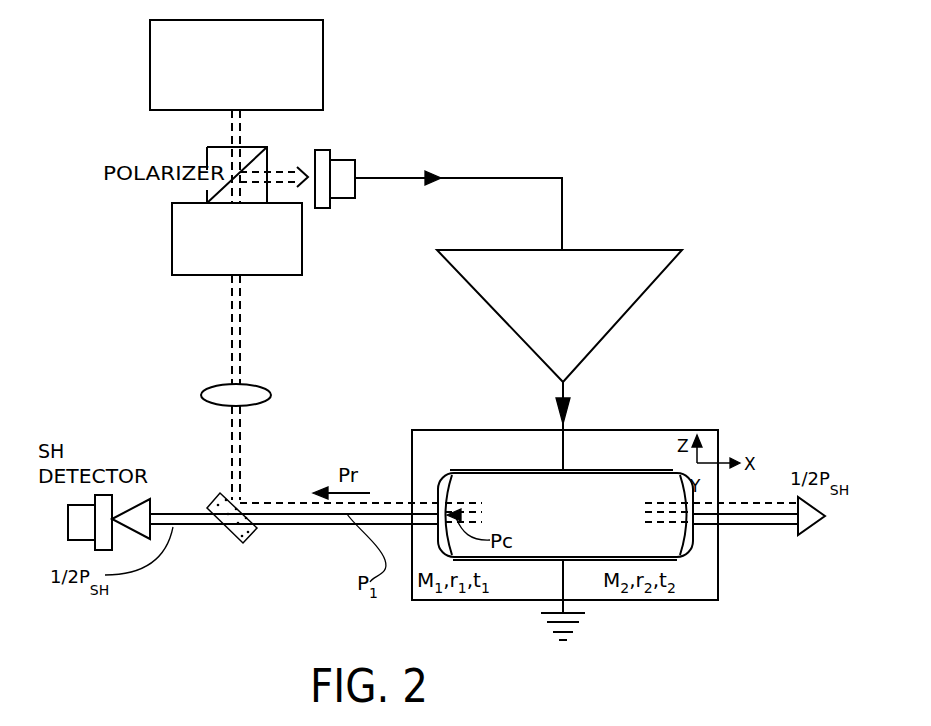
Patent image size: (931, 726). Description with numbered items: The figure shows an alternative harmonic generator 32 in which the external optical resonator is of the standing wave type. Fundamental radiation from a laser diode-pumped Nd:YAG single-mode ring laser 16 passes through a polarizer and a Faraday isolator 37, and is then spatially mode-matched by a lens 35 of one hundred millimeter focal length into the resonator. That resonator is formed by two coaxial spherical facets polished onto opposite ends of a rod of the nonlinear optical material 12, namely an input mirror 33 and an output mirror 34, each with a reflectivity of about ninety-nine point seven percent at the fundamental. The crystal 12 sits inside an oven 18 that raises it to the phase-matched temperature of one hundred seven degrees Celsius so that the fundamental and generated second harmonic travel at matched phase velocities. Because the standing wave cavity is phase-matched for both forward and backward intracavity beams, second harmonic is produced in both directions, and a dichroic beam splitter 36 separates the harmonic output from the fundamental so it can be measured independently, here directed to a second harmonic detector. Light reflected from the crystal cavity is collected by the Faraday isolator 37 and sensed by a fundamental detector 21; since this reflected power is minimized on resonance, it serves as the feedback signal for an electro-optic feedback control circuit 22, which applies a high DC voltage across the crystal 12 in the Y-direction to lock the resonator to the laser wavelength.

The nonlinear optical material 12 is at (578, 542).
The Nd:YAG single-mode ring laser 16 is at (323, 67).
The oven 18 is at (502, 430).
The detector 21 is at (345, 192).
The electro-optic feedback control circuit 22 is at (630, 310).
The harmonic generator 32 is at (660, 190).
The input mirror 33 is at (441, 505).
The output mirror 34 is at (692, 545).
The lens 35 is at (262, 386).
The dichroic beam splitter 36 is at (250, 540).
The Faraday isolator 37 is at (172, 246).